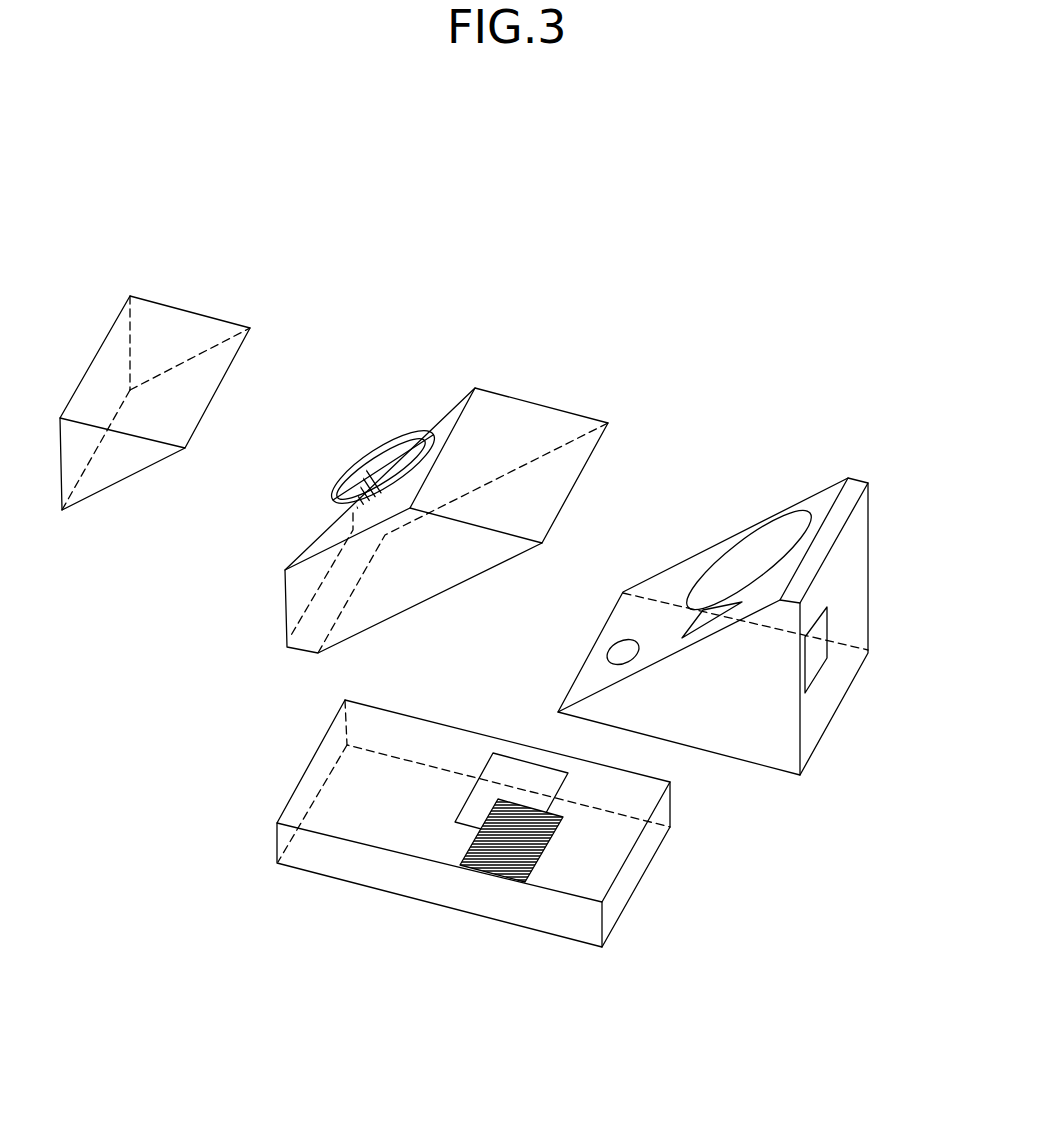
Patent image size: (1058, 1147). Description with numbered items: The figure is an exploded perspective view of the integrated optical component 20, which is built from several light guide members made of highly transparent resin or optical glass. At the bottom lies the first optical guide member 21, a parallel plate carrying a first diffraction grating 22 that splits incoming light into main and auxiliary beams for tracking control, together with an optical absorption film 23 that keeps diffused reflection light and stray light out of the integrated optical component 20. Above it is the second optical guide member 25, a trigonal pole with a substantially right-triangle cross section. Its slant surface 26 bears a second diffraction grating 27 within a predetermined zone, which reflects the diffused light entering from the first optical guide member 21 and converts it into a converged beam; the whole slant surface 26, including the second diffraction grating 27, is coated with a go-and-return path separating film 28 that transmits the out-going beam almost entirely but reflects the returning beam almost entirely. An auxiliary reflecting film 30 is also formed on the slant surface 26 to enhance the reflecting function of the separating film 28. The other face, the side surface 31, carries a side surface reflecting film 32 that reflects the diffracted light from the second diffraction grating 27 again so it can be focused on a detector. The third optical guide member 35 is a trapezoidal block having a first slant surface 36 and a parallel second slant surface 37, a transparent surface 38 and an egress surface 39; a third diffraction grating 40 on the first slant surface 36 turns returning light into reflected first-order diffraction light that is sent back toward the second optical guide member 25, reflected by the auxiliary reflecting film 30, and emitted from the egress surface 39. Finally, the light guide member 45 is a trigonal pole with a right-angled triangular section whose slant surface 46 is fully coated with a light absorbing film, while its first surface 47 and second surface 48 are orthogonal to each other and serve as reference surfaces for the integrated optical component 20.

The integrated optical component 20 is at (780, 197).
The first optical guide member 21 is at (618, 1008).
The first diffraction grating 22 is at (537, 847).
The optical absorption film 23 is at (423, 837).
The second optical guide member 25 is at (692, 353).
The slant surface 26 is at (668, 577).
The second diffraction grating 27 is at (717, 610).
The go-and-return path separating film 28 is at (795, 527).
The auxiliary reflecting film 30 is at (622, 640).
The side surface 31 is at (850, 577).
The side surface reflecting film 32 is at (815, 653).
The third optical guide member 35 is at (342, 270).
The first slant surface 36 is at (437, 418).
The second slant surface 37 is at (570, 487).
The transparent surface 38 is at (493, 407).
The egress surface 39 is at (328, 538).
The third diffraction grating 40 is at (378, 440).
The light guide member 45 is at (90, 217).
The slant surface 46 is at (187, 387).
The first surface 47 is at (147, 313).
The second surface 48 is at (97, 397).